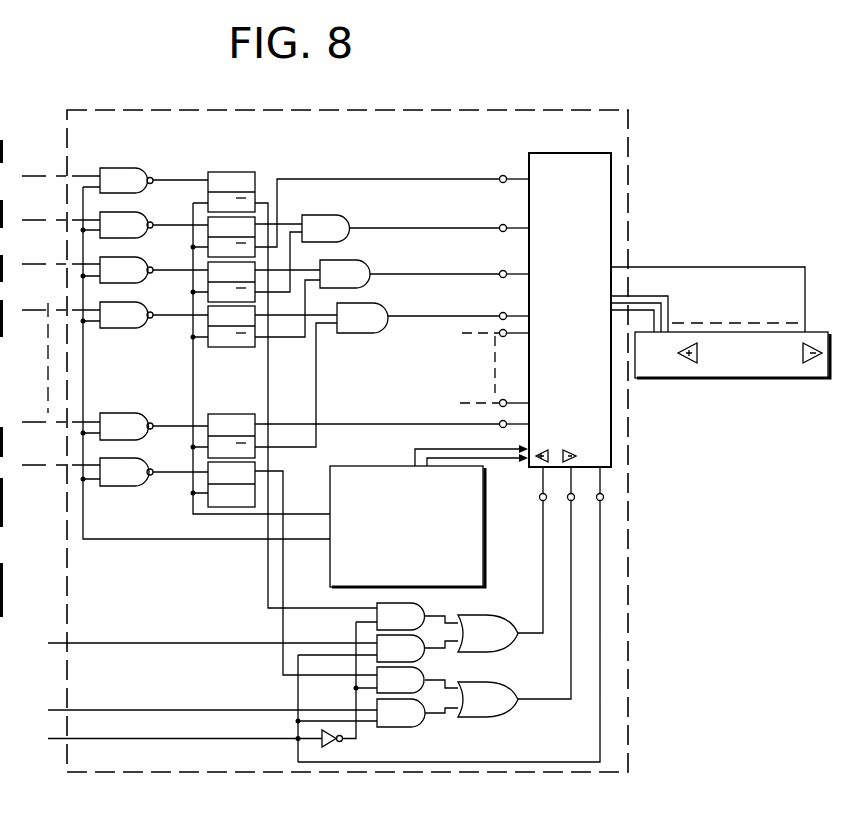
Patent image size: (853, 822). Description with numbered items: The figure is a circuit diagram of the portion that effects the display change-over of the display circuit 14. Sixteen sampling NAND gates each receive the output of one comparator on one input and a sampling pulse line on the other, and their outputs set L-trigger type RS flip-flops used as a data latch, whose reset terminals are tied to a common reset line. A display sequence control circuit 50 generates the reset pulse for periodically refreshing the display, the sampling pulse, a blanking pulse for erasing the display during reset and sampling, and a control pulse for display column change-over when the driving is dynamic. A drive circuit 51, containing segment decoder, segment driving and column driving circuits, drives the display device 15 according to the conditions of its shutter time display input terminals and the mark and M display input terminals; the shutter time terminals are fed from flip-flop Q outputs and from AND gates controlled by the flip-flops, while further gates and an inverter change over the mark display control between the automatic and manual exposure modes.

The display circuit 14 is at (505, 109).
The display device 15 is at (743, 380).
The display sequence control circuit 50 is at (485, 558).
The drive circuit 51 is at (527, 461).